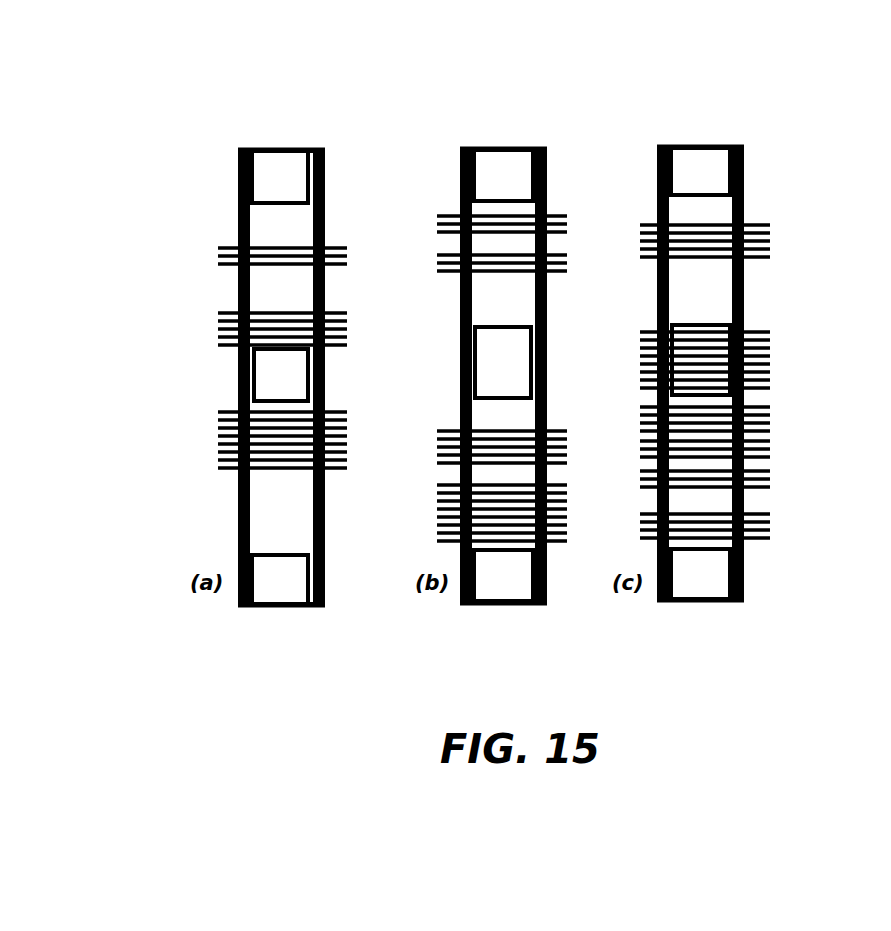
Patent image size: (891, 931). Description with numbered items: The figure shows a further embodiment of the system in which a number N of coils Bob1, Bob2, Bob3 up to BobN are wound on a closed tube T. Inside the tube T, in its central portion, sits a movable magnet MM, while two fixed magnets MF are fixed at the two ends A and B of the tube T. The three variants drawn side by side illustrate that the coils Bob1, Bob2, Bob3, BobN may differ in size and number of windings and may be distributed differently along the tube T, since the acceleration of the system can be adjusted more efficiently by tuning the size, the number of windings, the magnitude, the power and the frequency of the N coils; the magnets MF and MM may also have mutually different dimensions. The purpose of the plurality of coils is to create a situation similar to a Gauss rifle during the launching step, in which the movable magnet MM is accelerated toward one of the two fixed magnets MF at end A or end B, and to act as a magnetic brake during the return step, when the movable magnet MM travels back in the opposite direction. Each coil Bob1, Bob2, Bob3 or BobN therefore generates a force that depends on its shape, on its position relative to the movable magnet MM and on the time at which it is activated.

The end of the tube A is at (281, 146).
The end of the tube B is at (277, 609).
The fixed magnet MF is at (285, 175).
The movable magnet MM is at (272, 385).
The closed tube T is at (273, 240).
The coil Bob1 is at (222, 250).
The coil Bob2 is at (215, 330).
The coil Bob3 is at (225, 465).
The coil BobN is at (440, 530).